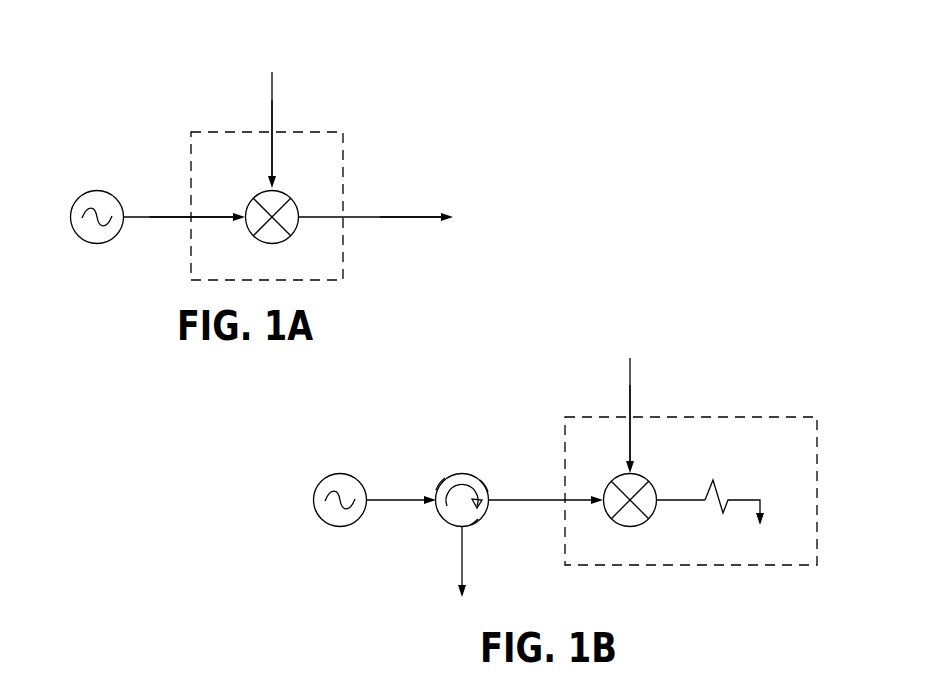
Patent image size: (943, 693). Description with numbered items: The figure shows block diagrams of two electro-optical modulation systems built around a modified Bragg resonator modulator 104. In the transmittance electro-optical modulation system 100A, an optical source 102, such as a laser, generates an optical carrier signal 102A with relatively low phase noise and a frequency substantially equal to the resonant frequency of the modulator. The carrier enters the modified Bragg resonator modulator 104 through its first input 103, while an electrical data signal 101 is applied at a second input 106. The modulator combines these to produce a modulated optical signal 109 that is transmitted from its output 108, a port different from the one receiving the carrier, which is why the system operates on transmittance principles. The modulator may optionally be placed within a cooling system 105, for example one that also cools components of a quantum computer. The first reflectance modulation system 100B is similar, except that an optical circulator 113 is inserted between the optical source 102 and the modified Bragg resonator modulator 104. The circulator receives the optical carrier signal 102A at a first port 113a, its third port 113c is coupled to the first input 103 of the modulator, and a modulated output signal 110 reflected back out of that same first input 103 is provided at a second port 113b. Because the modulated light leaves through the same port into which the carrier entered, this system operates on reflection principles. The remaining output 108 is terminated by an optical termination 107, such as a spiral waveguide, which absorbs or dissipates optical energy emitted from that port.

In FIG. 1A, the transmittance electro-optical modulation system 100A is at (265, 41).
In FIG. 1B, the first reflectance modulation system 100B is at (568, 334).
In FIG. 1A, the electrical data signal 101 is at (272, 123).
In FIG. 1B, the electrical data signal 101 is at (630, 408).
In FIG. 1A, the optical source 102 is at (71, 215).
In FIG. 1B, the optical source 102 is at (314, 499).
In FIG. 1A, the optical carrier signal 102A is at (131, 218).
In FIG. 1B, the optical carrier signal 102A is at (372, 502).
In FIG. 1A, the first input 103 is at (167, 215).
In FIG. 1B, the first input 103 is at (560, 502).
In FIG. 1A, the modified Bragg resonator modulator 104 is at (253, 200).
In FIG. 1B, the modified Bragg resonator modulator 104 is at (611, 484).
In FIG. 1A, the cooling system 105 is at (298, 132).
In FIG. 1B, the cooling system 105 is at (657, 417).
In FIG. 1A, the second input 106 is at (272, 98).
In FIG. 1B, the second input 106 is at (630, 380).
In FIG. 1B, the optical termination 107 is at (718, 488).
In FIG. 1A, the output 108 is at (401, 216).
In FIG. 1B, the output 108 is at (668, 502).
In FIG. 1A, the modulated optical signal 109 is at (349, 216).
In FIG. 1B, the modulated output signal 110 is at (461, 568).
In FIG. 1B, the optical circulator 113 is at (454, 475).
In FIG. 1B, the first port 113a is at (438, 490).
In FIG. 1B, the second port 113b is at (468, 528).
In FIG. 1B, the third port 113c is at (488, 492).